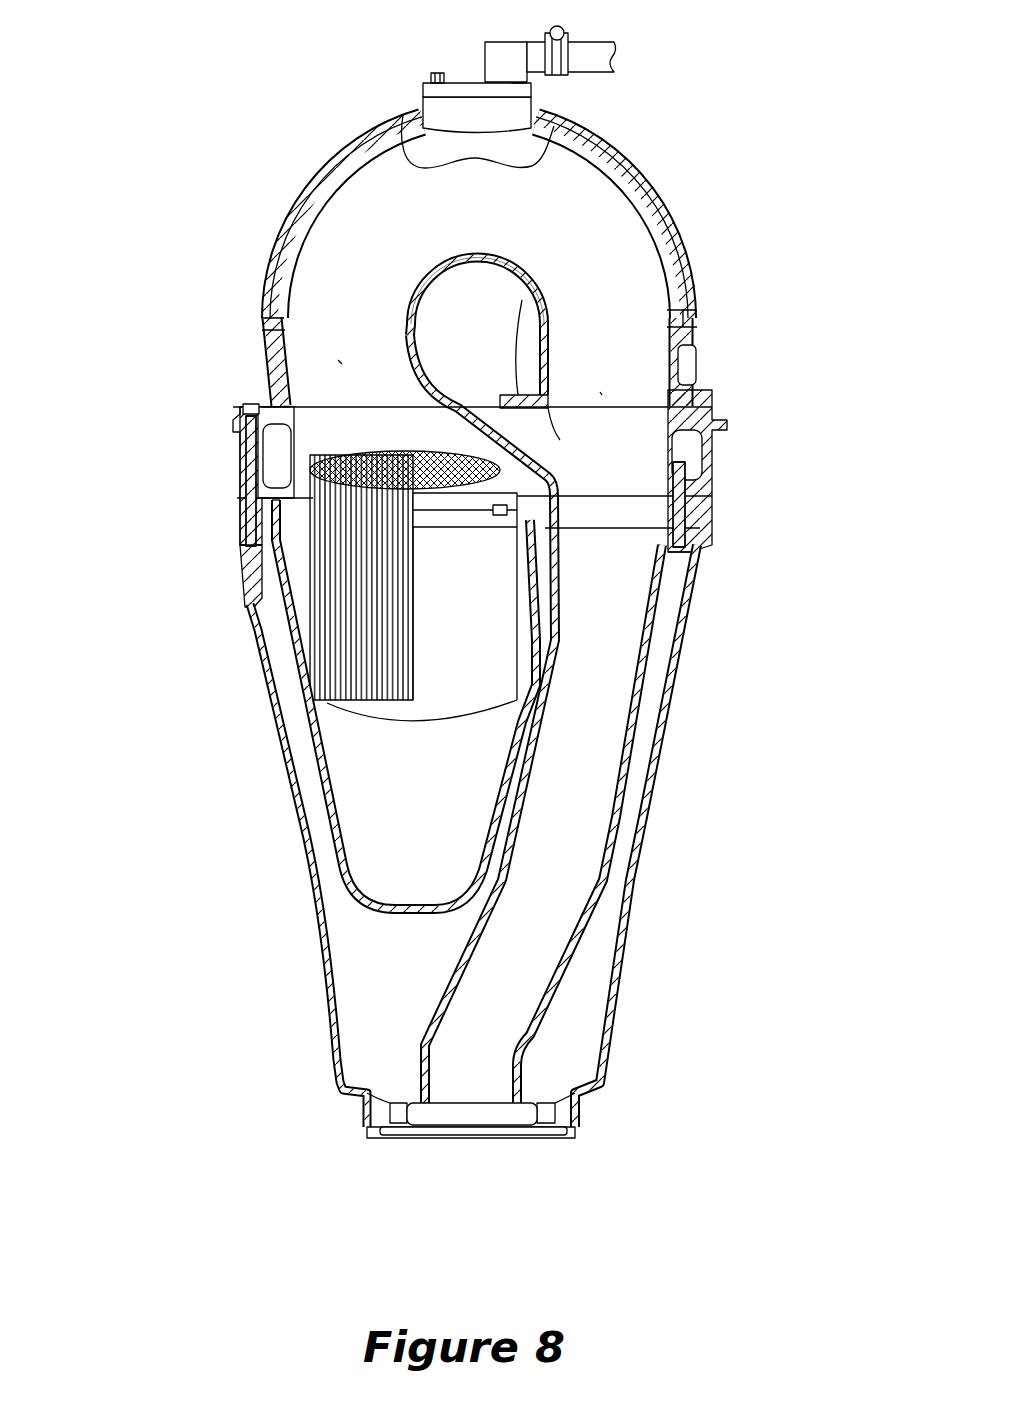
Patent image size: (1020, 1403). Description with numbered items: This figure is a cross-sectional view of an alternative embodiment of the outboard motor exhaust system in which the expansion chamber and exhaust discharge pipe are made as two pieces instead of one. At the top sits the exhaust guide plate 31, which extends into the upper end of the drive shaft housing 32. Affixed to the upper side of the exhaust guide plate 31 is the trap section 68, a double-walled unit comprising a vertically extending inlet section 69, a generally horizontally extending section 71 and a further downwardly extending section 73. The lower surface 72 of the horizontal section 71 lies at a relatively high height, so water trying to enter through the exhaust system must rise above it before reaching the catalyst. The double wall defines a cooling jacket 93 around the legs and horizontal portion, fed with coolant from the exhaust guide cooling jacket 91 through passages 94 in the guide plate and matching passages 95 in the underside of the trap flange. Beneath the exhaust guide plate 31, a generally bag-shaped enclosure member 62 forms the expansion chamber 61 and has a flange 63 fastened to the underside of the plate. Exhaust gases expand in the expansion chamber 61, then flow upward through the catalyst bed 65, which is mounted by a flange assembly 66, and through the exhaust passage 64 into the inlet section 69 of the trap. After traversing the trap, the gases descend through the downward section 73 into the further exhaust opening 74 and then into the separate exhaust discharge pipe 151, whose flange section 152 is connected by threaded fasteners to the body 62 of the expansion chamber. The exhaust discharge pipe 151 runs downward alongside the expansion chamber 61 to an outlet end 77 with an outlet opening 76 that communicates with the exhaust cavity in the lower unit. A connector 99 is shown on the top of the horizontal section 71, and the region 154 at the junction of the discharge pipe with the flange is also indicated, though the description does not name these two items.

The electrical connector 99 is at (587, 50).
The horizontally extending section 71 is at (457, 167).
The trap section 68 is at (618, 143).
The cooling jacket 93 is at (332, 160).
The downwardly extending section 73 is at (603, 390).
The inlet section 69 is at (340, 362).
The lower surface 72 is at (463, 253).
The matching passages 95 is at (522, 300).
The passages 94 is at (555, 427).
The exhaust guide plate 31 is at (246, 435).
The exhaust passage 64 is at (335, 368).
The exhaust guide cooling jacket 91 is at (277, 470).
The flange 63 is at (242, 517).
The flange section 152 is at (712, 498).
The inner wall junction 154 is at (665, 545).
The flange assembly 66 is at (453, 517).
The catalyst bed 65 is at (347, 665).
The expansion chamber 61 is at (330, 797).
The enclosure member 62 is at (318, 862).
The exhaust opening 74 is at (637, 540).
The exhaust discharge pipe 151 is at (613, 813).
The drive shaft housing 32 is at (320, 950).
The outlet end 77 is at (370, 1112).
The outlet opening 76 is at (487, 1097).